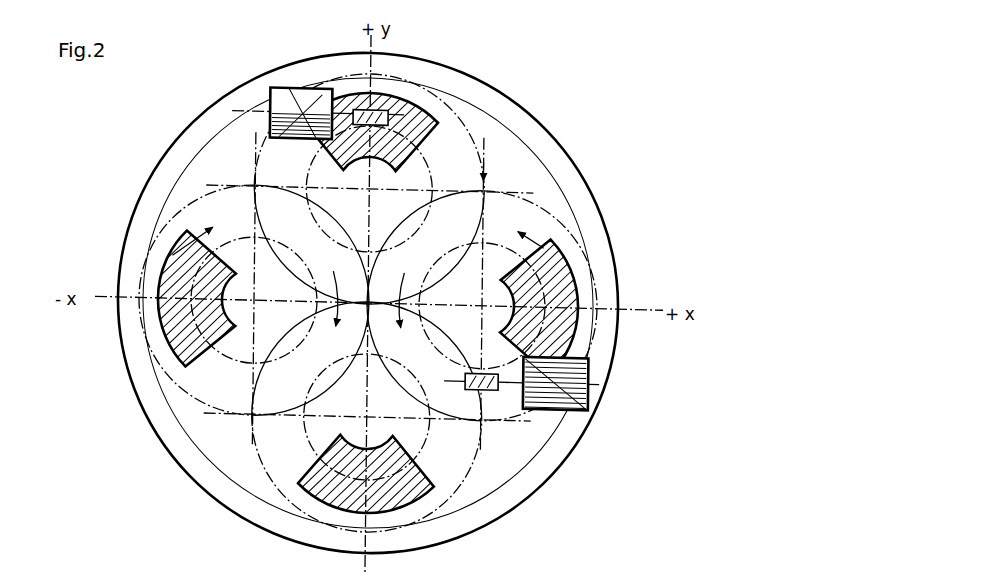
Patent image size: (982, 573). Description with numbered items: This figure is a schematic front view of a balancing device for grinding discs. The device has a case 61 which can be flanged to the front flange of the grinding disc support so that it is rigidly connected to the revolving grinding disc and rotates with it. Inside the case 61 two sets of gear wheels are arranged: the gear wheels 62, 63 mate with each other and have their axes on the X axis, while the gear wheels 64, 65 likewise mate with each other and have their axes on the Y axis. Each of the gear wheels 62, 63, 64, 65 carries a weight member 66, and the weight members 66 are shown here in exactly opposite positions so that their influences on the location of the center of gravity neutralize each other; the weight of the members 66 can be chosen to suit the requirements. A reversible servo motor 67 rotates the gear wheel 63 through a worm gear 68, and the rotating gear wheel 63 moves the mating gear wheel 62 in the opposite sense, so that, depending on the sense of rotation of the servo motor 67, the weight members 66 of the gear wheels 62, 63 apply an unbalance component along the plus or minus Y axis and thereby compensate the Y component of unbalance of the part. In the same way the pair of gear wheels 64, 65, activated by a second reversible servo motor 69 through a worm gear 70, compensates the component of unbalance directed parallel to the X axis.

The case 61 is at (222, 507).
The gear wheel 62 is at (205, 382).
The gear wheel 63 is at (527, 223).
The gear wheel 64 is at (447, 140).
The gear wheel 65 is at (447, 462).
The weight member 66 is at (405, 102).
The reversible servo motor 67 is at (577, 406).
The worm gear 68 is at (491, 389).
The second reversible servo motor 69 is at (287, 89).
The worm gear 70 is at (366, 111).